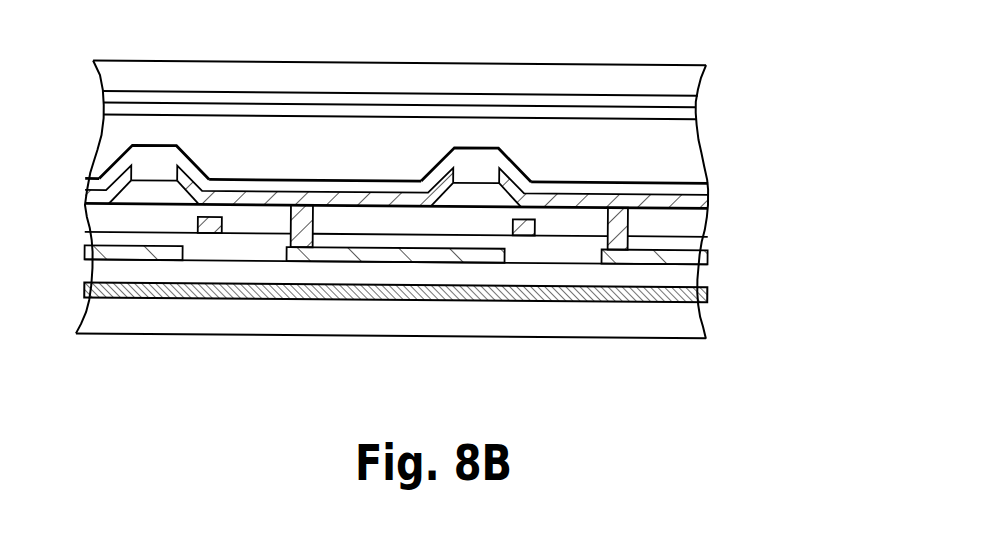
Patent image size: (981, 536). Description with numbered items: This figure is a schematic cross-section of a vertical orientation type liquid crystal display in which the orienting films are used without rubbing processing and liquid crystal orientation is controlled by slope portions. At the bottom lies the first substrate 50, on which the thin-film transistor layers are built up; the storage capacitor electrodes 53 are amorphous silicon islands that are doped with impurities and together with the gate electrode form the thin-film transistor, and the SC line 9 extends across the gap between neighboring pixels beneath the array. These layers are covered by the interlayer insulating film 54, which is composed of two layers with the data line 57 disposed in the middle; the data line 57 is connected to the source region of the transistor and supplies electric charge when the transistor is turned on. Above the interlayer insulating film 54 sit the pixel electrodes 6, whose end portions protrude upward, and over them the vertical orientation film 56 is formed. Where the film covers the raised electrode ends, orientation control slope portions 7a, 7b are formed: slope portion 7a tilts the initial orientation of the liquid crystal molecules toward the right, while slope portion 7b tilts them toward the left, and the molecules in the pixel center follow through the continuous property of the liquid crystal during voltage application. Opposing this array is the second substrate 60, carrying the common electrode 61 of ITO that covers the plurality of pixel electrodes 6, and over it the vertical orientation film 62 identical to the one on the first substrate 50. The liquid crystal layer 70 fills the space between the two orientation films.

The orientation control slope portion 7a is at (192, 158).
The orientation control slope portion 7b is at (110, 158).
The second substrate 60 is at (680, 81).
The common electrode 61 is at (688, 101).
The vertical orientation film 62 is at (683, 118).
The liquid crystal layer 70 is at (685, 158).
The vertical orientation film 56 is at (712, 183).
The pixel electrode 6 is at (712, 206).
The data line 57 is at (222, 225).
The interlayer insulating film 54 is at (693, 244).
The storage capacitor electrode 53 is at (693, 260).
The SC line 9 is at (695, 300).
The first substrate 50 is at (692, 327).